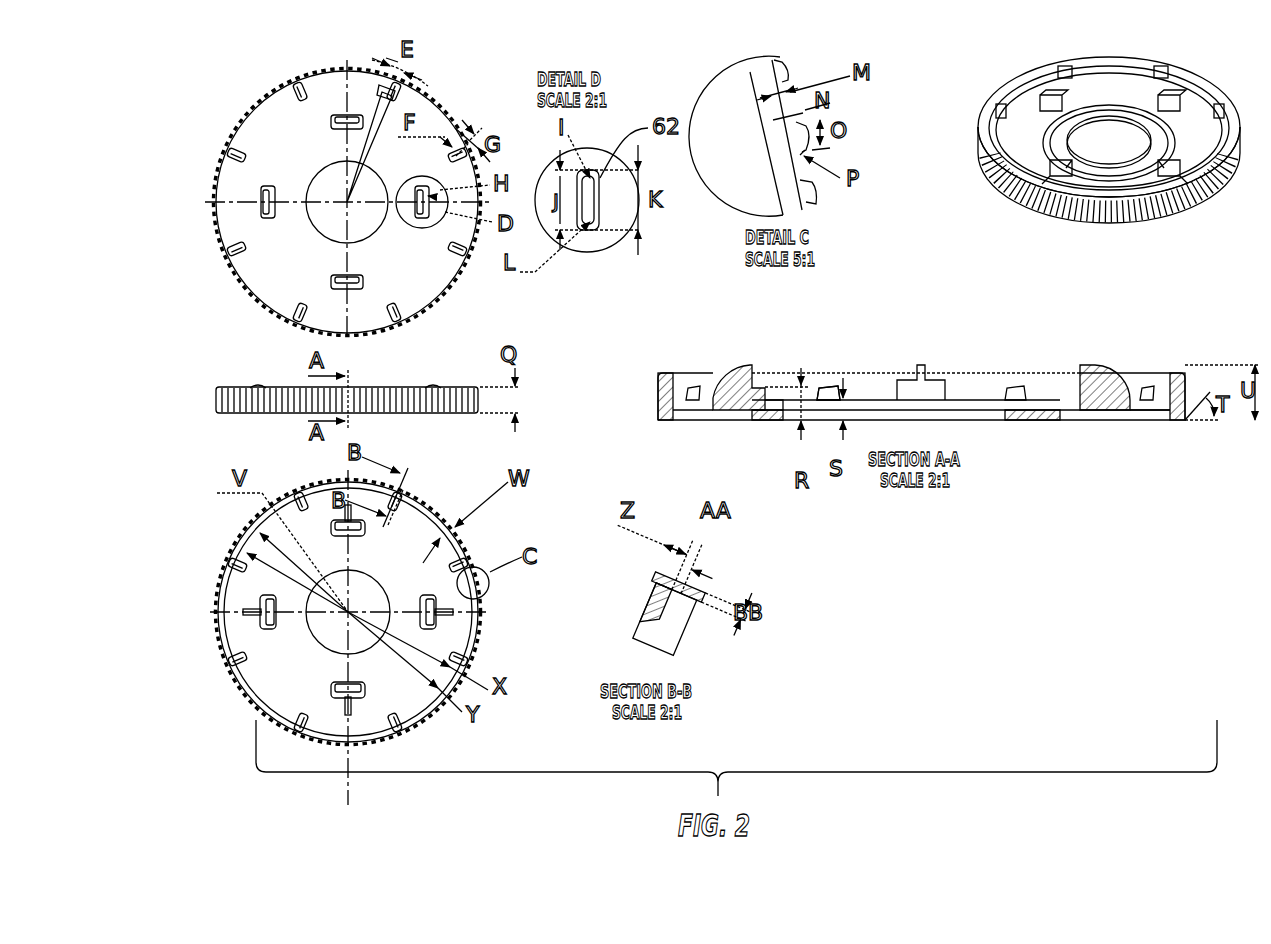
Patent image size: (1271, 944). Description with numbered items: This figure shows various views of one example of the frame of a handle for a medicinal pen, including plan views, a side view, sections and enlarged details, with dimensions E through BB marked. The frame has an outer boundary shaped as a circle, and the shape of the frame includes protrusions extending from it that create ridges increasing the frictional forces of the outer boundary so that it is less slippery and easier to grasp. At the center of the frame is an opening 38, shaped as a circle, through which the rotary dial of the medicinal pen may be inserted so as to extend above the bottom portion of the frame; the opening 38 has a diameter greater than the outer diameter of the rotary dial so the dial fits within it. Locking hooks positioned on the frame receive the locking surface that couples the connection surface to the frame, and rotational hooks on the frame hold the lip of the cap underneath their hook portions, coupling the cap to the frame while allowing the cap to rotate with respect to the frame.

The opening 38 is at (322, 224).